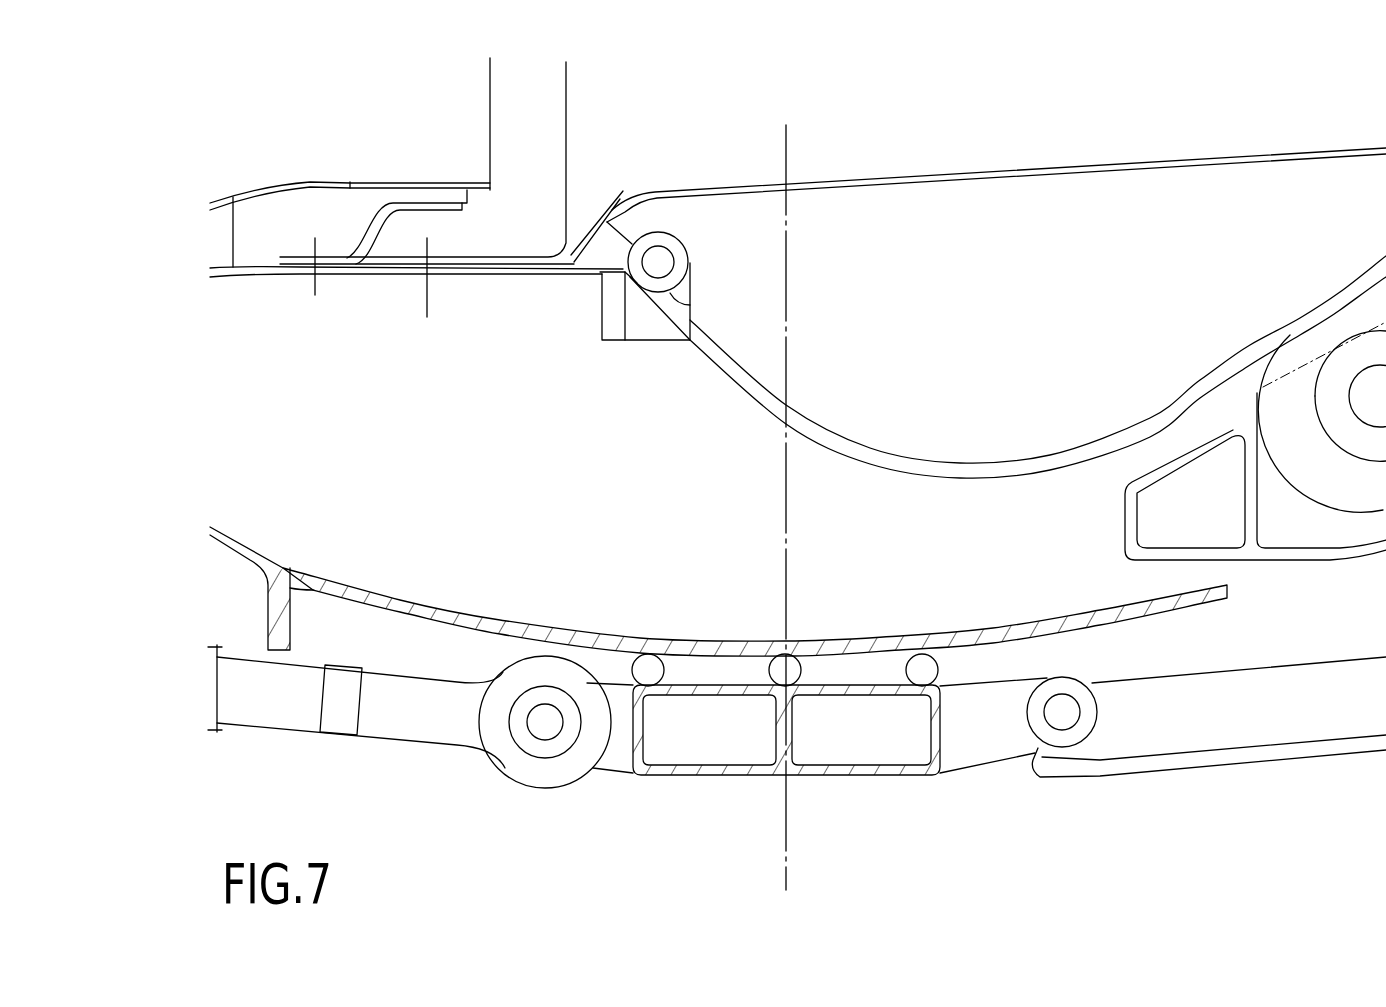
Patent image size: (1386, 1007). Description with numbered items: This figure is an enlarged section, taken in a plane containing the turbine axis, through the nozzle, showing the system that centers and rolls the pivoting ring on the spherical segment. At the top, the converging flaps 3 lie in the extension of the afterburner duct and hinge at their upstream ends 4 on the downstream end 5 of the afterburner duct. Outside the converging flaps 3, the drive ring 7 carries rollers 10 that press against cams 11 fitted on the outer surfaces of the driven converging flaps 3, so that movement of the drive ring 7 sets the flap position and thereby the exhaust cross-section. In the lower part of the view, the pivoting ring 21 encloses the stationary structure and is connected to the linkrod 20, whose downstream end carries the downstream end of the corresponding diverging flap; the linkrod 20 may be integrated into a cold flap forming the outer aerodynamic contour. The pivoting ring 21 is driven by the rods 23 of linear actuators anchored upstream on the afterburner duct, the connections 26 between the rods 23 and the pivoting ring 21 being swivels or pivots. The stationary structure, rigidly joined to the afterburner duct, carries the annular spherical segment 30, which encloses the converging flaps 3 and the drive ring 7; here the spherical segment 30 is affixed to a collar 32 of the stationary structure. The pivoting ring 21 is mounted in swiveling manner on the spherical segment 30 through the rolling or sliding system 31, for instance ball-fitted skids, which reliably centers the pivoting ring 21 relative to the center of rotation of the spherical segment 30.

The converging flaps 3 is at (1025, 172).
The upstream ends of the converging flaps 4 is at (638, 223).
The downstream end of the afterburner duct 5 is at (530, 273).
The drive ring 7 is at (1128, 535).
The rollers 10 is at (1320, 315).
The cams 11 is at (912, 467).
The linkrod 20 is at (1267, 707).
The pivoting ring 21 is at (718, 777).
The rods of the linear actuators 23 is at (403, 718).
The connections between the rods and the pivoting ring 26 is at (542, 723).
The annular spherical segment 30 is at (623, 638).
The rolling or sliding system 31 is at (795, 668).
The collar 32 is at (273, 617).